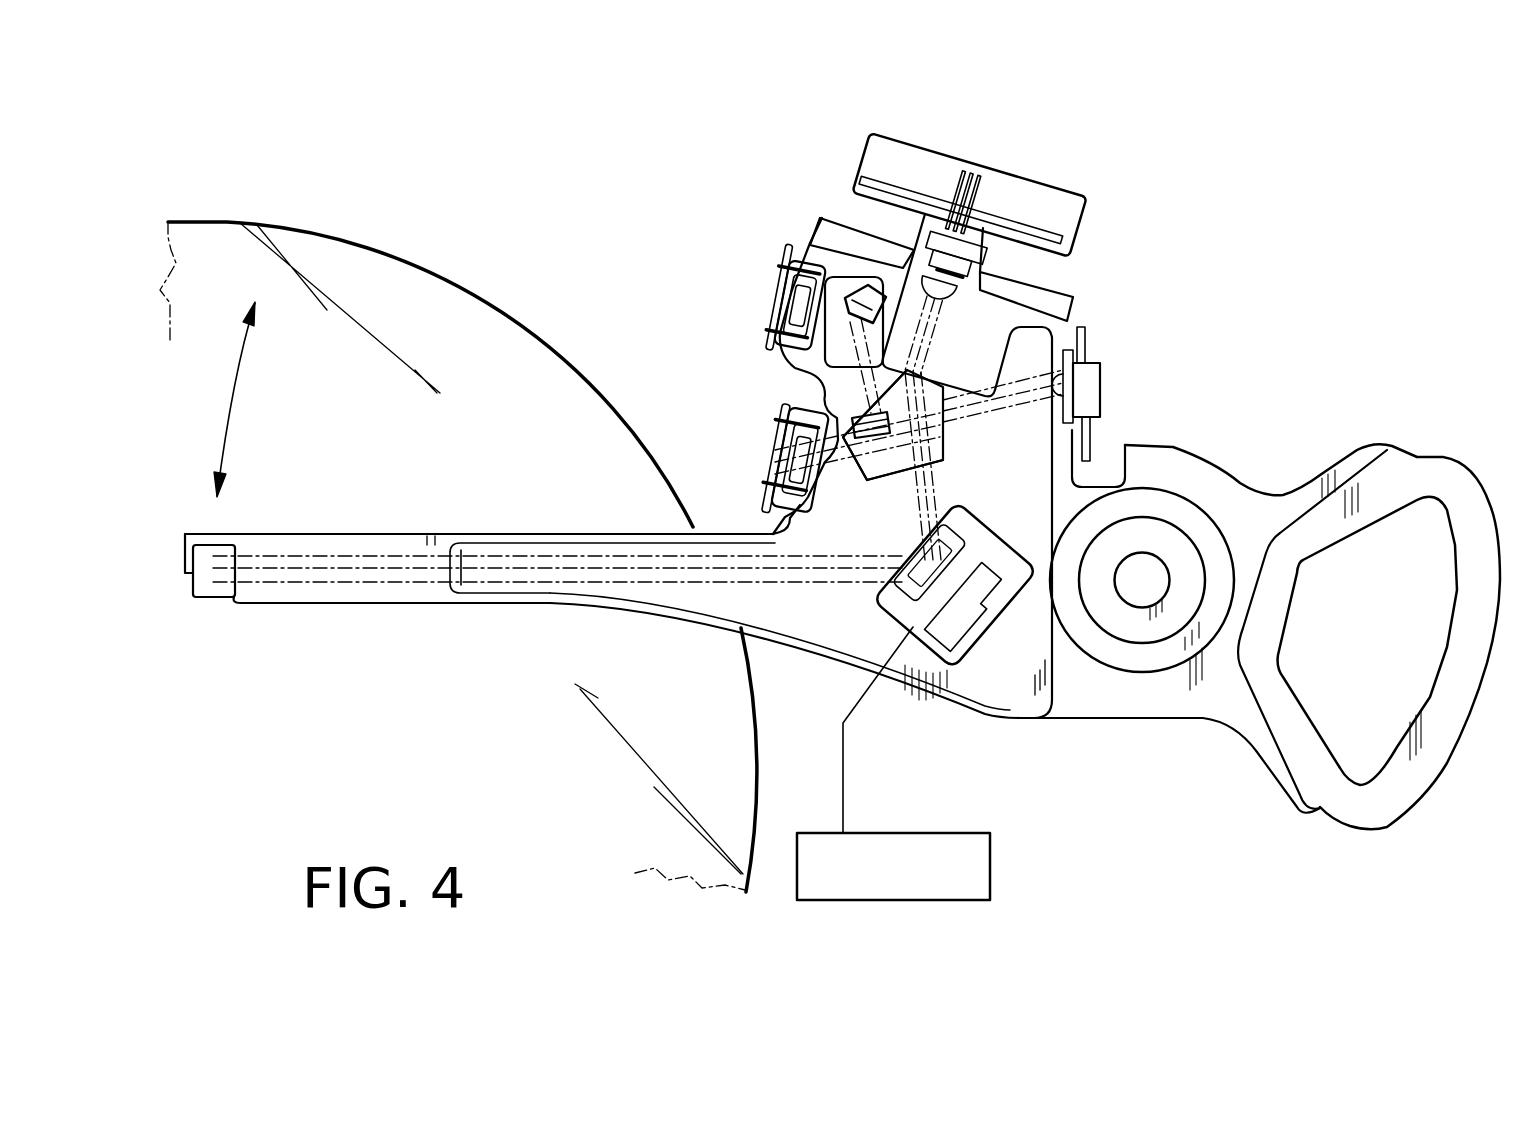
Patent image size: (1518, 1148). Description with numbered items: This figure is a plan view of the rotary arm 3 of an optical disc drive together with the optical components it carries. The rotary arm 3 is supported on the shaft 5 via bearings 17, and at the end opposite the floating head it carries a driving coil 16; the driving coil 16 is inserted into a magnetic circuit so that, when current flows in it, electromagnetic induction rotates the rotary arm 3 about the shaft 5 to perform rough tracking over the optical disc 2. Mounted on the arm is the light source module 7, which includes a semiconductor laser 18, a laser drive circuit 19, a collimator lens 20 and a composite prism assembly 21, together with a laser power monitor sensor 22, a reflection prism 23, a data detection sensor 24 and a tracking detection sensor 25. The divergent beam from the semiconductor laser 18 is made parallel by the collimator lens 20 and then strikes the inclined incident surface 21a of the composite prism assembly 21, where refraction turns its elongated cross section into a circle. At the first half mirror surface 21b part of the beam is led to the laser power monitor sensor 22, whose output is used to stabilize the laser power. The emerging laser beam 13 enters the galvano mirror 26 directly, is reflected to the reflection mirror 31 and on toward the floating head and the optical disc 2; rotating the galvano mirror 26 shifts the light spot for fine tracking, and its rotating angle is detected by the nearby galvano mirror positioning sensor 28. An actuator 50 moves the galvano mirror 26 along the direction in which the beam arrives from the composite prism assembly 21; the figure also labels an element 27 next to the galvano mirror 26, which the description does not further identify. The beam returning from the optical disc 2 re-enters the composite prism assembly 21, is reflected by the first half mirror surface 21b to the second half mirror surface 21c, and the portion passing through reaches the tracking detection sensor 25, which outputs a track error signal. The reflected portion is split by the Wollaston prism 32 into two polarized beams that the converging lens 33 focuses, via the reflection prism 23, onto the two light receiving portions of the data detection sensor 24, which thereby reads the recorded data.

The optical disc 2 is at (377, 250).
The rotary arm 3 is at (550, 615).
The shaft 5 is at (1142, 518).
The light source module 7 is at (712, 172).
The laser beam 13 is at (320, 532).
The driving coil 16 is at (1420, 455).
The bearings 17 is at (1188, 537).
The semiconductor laser 18 is at (937, 227).
The laser drive circuit 19 is at (1017, 233).
The collimator lens 20 is at (953, 287).
The composite prism assembly 21 is at (933, 417).
The incident surface 21a is at (903, 397).
The first half mirror surface 21b is at (940, 470).
The second half mirror surface 21c is at (873, 470).
The laser power monitor sensor 22 is at (1100, 368).
The reflection prism 23 is at (860, 293).
The data detection sensor 24 is at (762, 292).
The tracking detection sensor 25 is at (752, 480).
The galvano mirror 26 is at (937, 557).
The lead wire 27 is at (905, 635).
The galvano mirror positioning sensor 28 is at (977, 613).
The reflection mirror 31 is at (208, 603).
The Wollaston prism 32 is at (797, 423).
The converging lens 33 is at (807, 393).
The actuator 50 is at (890, 830).